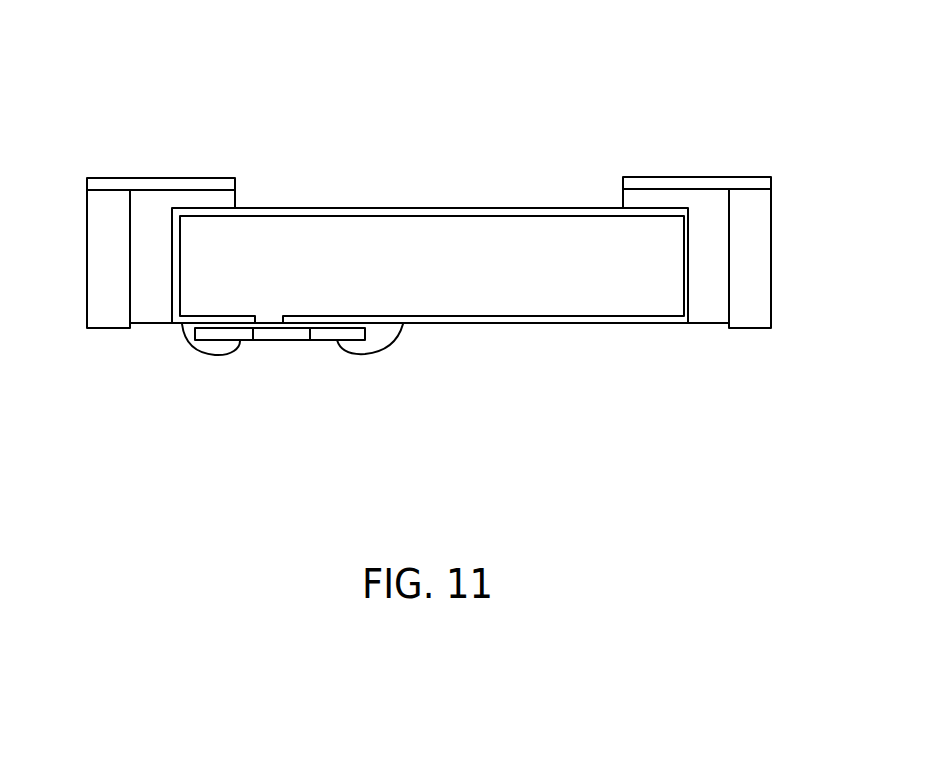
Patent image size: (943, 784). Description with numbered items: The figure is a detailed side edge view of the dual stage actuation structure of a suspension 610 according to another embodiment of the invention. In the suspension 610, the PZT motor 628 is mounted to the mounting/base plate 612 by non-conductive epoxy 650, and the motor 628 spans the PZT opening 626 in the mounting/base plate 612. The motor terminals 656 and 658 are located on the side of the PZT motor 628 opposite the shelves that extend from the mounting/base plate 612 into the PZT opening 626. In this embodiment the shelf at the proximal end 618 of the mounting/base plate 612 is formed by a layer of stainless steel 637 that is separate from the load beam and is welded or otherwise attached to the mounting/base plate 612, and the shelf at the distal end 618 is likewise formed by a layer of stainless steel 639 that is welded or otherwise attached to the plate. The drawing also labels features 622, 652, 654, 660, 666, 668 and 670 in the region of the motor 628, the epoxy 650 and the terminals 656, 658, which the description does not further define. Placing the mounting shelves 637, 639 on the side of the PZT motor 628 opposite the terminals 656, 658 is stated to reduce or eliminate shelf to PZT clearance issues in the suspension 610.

The suspension 610 is at (507, 122).
The mounting/base plate 612 is at (78, 324).
The proximal end 618 is at (760, 242).
The first side support 622 is at (98, 242).
The PZT opening 626 is at (543, 340).
The PZT motor 628 is at (527, 227).
The layer of stainless steel 637 is at (670, 177).
The layer of stainless steel 639 is at (193, 180).
The non-conductive epoxy 650 is at (150, 215).
The bottom surface 652 is at (603, 318).
The top surface 654 is at (302, 212).
The motor terminal 656 is at (368, 318).
The motor terminal 658 is at (225, 318).
The side edge 660 is at (170, 280).
The electronic component 666 is at (345, 338).
The component contact 668 is at (227, 337).
The solder fillet 670 is at (200, 353).